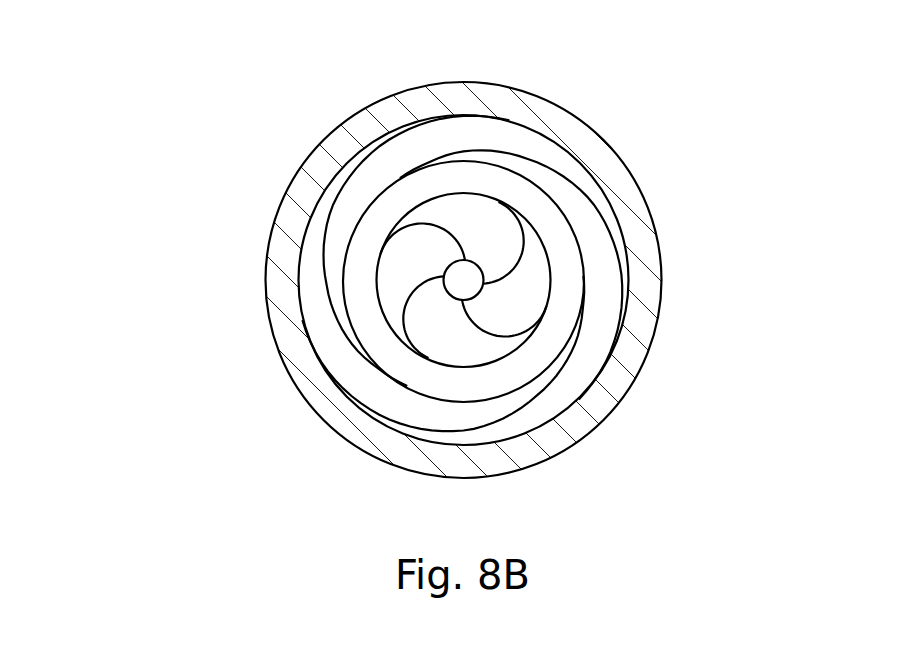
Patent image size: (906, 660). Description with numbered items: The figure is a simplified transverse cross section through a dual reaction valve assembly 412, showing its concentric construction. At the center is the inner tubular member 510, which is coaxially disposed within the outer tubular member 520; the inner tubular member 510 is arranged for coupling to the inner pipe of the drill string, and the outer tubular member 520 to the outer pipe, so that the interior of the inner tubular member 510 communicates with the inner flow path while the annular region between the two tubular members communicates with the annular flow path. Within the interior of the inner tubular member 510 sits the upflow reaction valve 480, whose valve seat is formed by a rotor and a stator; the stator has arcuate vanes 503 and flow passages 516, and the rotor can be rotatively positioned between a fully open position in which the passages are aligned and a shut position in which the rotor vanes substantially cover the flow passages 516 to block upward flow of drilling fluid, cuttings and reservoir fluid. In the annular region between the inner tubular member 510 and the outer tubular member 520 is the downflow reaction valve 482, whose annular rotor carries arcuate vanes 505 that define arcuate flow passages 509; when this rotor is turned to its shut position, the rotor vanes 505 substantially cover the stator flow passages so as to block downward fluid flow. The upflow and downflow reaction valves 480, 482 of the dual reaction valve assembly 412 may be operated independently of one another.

The dual reaction valve assembly 412 is at (168, 66).
The upflow reaction valve 480 is at (412, 353).
The downflow reaction valve 482 is at (428, 144).
The arcuate vanes 503 is at (405, 307).
The arcuate vanes 505 is at (621, 251).
The arcuate flow passages 509 is at (567, 382).
The inner tubular member 510 is at (576, 206).
The flow passages 516 is at (405, 260).
The outer tubular member 520 is at (598, 126).